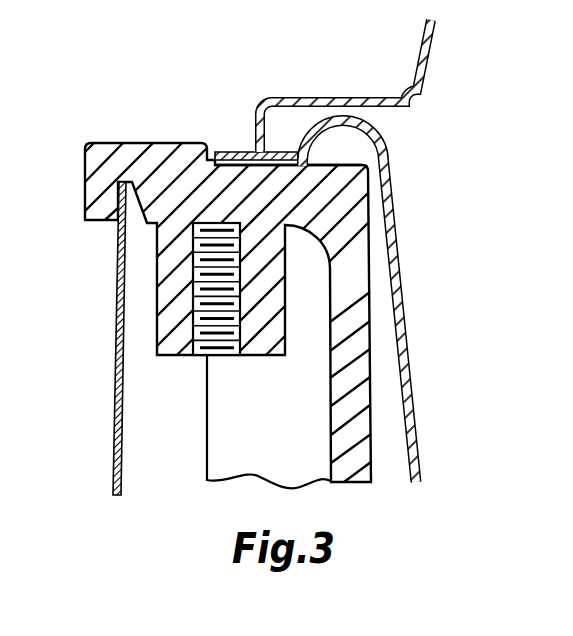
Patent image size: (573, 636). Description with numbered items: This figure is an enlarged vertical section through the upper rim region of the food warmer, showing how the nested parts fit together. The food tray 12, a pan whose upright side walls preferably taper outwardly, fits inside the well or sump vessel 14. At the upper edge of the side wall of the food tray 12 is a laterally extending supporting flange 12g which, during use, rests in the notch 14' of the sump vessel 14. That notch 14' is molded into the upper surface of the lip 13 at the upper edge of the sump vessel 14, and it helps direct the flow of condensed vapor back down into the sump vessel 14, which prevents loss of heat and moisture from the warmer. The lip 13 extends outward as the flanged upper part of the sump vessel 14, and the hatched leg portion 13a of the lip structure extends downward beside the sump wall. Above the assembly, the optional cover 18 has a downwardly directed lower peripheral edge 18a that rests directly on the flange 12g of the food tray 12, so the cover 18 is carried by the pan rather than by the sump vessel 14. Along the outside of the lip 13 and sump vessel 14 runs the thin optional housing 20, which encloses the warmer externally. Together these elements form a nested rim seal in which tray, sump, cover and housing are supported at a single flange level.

The food tray 12 is at (410, 331).
The supporting flange 12g is at (233, 152).
The lip 13 is at (142, 150).
The housing leg 13a is at (157, 325).
The sump vessel 14 is at (289, 326).
The notch 14' is at (288, 150).
The cover 18 is at (412, 62).
The lower peripheral edge 18a is at (249, 130).
The housing 20 is at (115, 400).